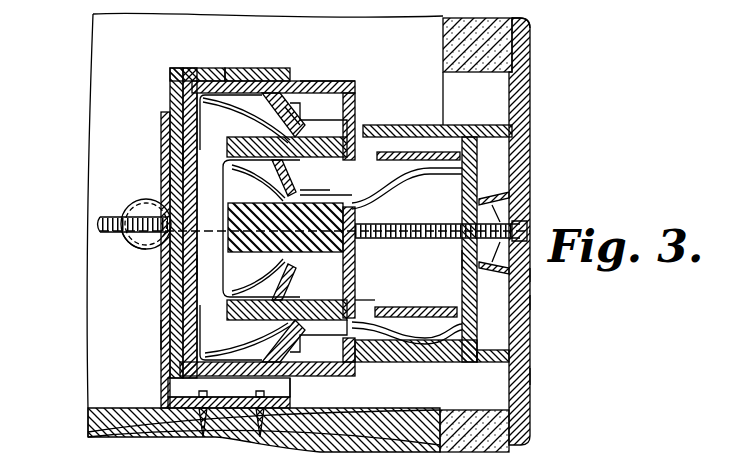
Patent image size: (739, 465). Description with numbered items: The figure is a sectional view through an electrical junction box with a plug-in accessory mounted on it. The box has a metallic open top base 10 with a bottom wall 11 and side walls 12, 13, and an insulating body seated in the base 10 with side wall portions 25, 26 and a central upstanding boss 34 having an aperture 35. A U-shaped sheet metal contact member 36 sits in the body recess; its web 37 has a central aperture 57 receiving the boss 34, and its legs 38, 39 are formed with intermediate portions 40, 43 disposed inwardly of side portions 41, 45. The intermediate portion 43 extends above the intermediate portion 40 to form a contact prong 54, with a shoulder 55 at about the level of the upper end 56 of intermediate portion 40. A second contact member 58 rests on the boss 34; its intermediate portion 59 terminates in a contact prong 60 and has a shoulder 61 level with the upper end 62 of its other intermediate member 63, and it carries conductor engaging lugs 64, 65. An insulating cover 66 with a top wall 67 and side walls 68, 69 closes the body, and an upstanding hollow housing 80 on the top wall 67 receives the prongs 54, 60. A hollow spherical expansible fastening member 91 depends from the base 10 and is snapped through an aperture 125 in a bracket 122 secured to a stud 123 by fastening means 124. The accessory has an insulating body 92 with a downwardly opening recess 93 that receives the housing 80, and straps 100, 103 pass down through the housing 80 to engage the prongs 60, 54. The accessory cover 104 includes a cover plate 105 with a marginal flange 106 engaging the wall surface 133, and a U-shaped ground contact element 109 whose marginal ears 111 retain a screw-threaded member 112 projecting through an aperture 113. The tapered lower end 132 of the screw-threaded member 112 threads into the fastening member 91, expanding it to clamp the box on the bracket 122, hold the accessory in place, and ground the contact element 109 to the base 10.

The base 10 is at (168, 67).
The bottom wall 11 is at (168, 80).
The side wall 12 is at (200, 68).
The side wall 13 is at (180, 387).
The side wall portion 25 is at (246, 81).
The side wall portion 26 is at (283, 378).
The boss 34 is at (197, 293).
The aperture 35 is at (172, 183).
The contact member 36 is at (196, 134).
The web 37 is at (198, 114).
The leg 38 is at (222, 97).
The leg 39 is at (239, 358).
The intermediate portion 40 is at (240, 119).
The side portion 41 is at (264, 95).
The intermediate portion 43 is at (284, 342).
The side portion 45 is at (286, 396).
The contact prong 54 is at (392, 346).
The shoulder 55 is at (362, 312).
The upper end 56 is at (356, 125).
The central aperture 57 is at (196, 155).
The contact member 58 is at (197, 266).
The intermediate portion 59 is at (318, 202).
The contact prong 60 is at (390, 186).
The shoulder 61 is at (358, 196).
The upper end 62 is at (352, 252).
The intermediate member 63 is at (312, 292).
The conductor engaging lugs 64 is at (290, 174).
The lugs 65 is at (290, 288).
The cover 66 is at (356, 82).
The top wall 67 is at (352, 274).
The side wall 68 is at (326, 81).
The side wall 69 is at (338, 376).
The housing 80 is at (462, 261).
The fastening member 91 is at (126, 206).
The body 92 is at (428, 125).
The recess 93 is at (406, 125).
The strap 100 is at (410, 174).
The strap 103 is at (433, 320).
The cover 104 is at (530, 108).
The cover plate 105 is at (530, 376).
The marginal flange 106 is at (522, 21).
The ground contact element 109 is at (530, 300).
The marginal ears 111 is at (496, 198).
The screw-threaded member 112 is at (398, 239).
The aperture 113 is at (530, 277).
The bracket 122 is at (161, 334).
The stud 123 is at (100, 409).
The fastening means 124 is at (264, 436).
The aperture 125 is at (160, 252).
The lower end 132 is at (100, 222).
The wall surface 133 is at (510, 52).